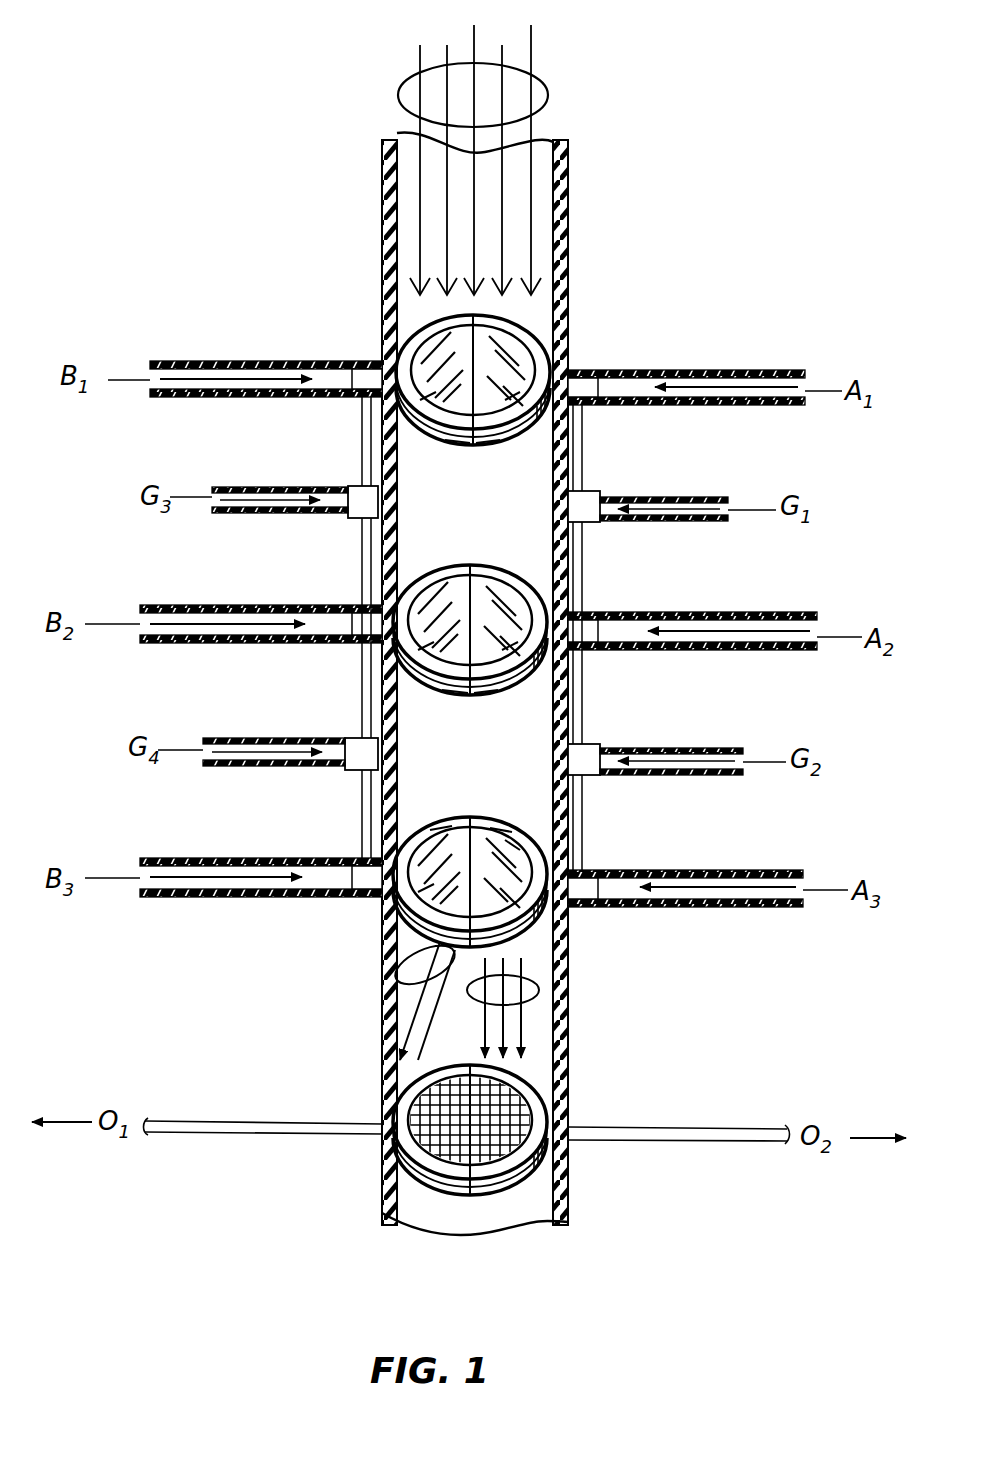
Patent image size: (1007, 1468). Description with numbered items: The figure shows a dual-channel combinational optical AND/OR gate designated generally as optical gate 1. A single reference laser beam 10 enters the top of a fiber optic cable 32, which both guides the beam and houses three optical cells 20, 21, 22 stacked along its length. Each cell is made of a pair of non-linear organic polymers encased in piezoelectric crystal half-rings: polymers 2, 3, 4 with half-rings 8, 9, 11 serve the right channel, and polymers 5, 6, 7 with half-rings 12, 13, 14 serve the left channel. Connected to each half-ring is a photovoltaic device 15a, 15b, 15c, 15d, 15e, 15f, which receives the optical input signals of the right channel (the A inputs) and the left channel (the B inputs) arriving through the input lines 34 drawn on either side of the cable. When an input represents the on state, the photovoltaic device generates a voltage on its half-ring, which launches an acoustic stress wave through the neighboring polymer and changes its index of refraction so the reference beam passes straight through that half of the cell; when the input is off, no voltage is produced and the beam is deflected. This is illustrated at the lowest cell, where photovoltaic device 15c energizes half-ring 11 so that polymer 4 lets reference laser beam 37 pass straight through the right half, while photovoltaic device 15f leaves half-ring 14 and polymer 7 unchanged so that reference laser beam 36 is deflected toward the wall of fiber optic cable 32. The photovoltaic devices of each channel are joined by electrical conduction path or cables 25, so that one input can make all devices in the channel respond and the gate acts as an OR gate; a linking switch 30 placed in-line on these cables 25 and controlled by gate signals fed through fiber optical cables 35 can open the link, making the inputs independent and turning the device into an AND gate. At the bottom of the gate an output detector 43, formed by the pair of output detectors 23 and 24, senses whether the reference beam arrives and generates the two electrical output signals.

The optical gate 1 is at (692, 285).
The reference laser beam 10 is at (548, 90).
The fiber optic cable 32 is at (568, 205).
The optical cell 20 is at (538, 326).
The optical cell 21 is at (488, 566).
The optical cell 22 is at (456, 812).
The non-linear organic polymer 2 is at (512, 430).
The non-linear organic polymer 3 is at (512, 680).
The non-linear organic polymer 4 is at (510, 840).
The non-linear organic polymer 5 is at (430, 440).
The non-linear organic polymer 6 is at (428, 690).
The non-linear organic polymer 7 is at (426, 860).
The piezoelectric crystal half-ring 8 is at (488, 444).
The piezoelectric crystal half-ring 9 is at (486, 694).
The piezoelectric crystal half-ring 11 is at (496, 826).
The piezoelectric crystal half-ring 12 is at (455, 445).
The piezoelectric crystal half-ring 13 is at (452, 695).
The piezoelectric crystal half-ring 14 is at (434, 828).
The photovoltaic device 15a is at (584, 376).
The photovoltaic device 15b is at (584, 624).
The photovoltaic device 15c is at (584, 882).
The photovoltaic device 15d is at (362, 372).
The photovoltaic device 15e is at (362, 618).
The photovoltaic device 15f is at (362, 872).
The electrical conduction path or cables 25 is at (362, 438).
The linking switch 30 is at (358, 488).
The feed pipe 34 is at (205, 398).
The fiber optical cables 35 is at (232, 514).
The reference laser beam 36 is at (395, 965).
The reference laser beam 37 is at (540, 998).
The output detector 23 is at (505, 1195).
The output detector 24 is at (436, 1190).
The output detector 43 is at (483, 1214).